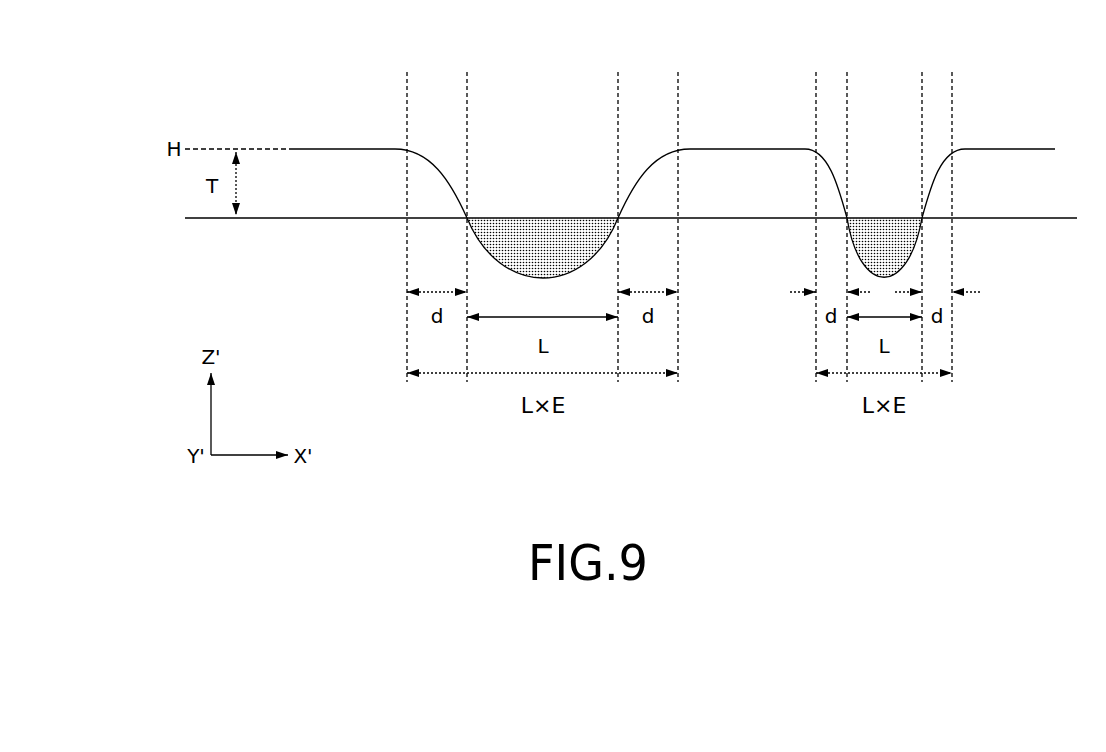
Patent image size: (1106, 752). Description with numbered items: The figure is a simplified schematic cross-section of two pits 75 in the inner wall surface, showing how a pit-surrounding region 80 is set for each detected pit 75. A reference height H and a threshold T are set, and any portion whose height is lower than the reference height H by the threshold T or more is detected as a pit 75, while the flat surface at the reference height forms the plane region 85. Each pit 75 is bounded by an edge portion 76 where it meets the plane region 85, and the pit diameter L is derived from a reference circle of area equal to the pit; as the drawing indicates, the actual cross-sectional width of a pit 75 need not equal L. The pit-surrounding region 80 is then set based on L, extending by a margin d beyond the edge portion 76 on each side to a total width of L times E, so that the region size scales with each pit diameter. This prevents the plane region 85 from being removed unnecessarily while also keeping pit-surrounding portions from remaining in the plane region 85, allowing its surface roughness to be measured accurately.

The pit 75 is at (467, 152).
The edge portion 76 is at (467, 218).
The pit-surrounding region 80 is at (407, 70).
The plane region 85 is at (748, 149).